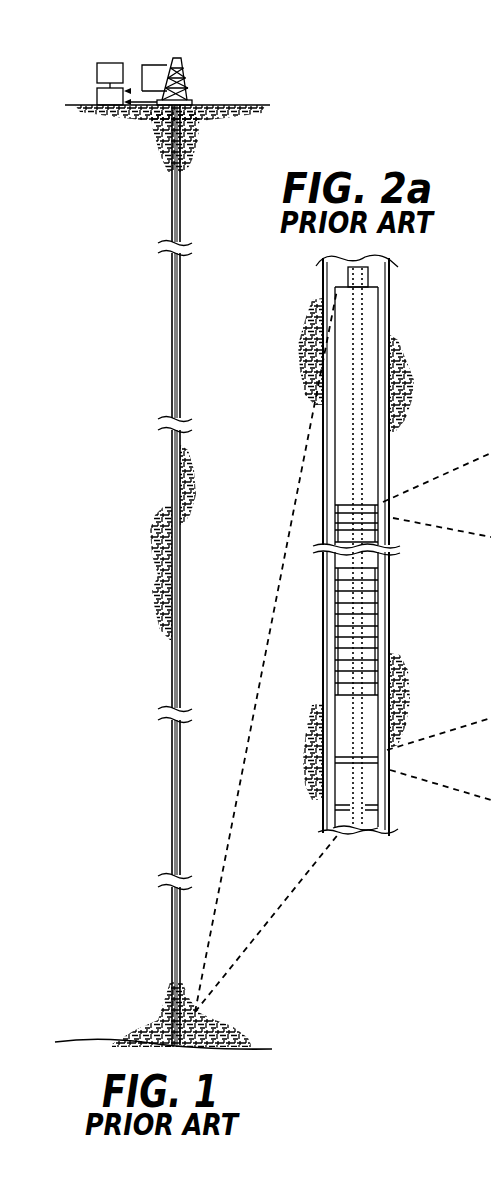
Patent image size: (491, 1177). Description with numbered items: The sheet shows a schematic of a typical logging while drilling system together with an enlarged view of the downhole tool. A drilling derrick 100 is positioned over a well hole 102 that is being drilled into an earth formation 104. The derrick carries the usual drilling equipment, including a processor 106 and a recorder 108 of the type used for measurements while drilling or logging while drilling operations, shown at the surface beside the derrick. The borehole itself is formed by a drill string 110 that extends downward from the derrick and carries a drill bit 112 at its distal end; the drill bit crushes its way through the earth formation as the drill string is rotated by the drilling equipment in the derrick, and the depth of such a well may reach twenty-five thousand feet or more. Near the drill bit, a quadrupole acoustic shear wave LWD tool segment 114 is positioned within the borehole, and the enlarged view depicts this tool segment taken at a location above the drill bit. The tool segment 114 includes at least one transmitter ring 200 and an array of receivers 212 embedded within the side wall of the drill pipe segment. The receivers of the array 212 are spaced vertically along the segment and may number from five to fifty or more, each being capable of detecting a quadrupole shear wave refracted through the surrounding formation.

In FIG. 1, the drilling derrick 100 is at (188, 80).
In FIG. 1, the well hole 102 is at (158, 137).
In FIG. 2a, the well hole 102 is at (323, 285).
In FIG. 1, the earth formation 104 is at (223, 173).
In FIG. 1, the processor 106 is at (97, 100).
In FIG. 1, the recorder 108 is at (110, 63).
In FIG. 1, the drill string 110 is at (172, 345).
In FIG. 1, the drill bit 112 is at (230, 1030).
In FIG. 1, the quadrupole acoustic shear wave LWD tool segment 114 is at (160, 1022).
In FIG. 2a, the quadrupole acoustic shear wave LWD tool segment 114 is at (373, 318).
In FIG. 2a, the transmitter ring 200 is at (362, 760).
In FIG. 2a, the array of receivers 212 is at (312, 510).